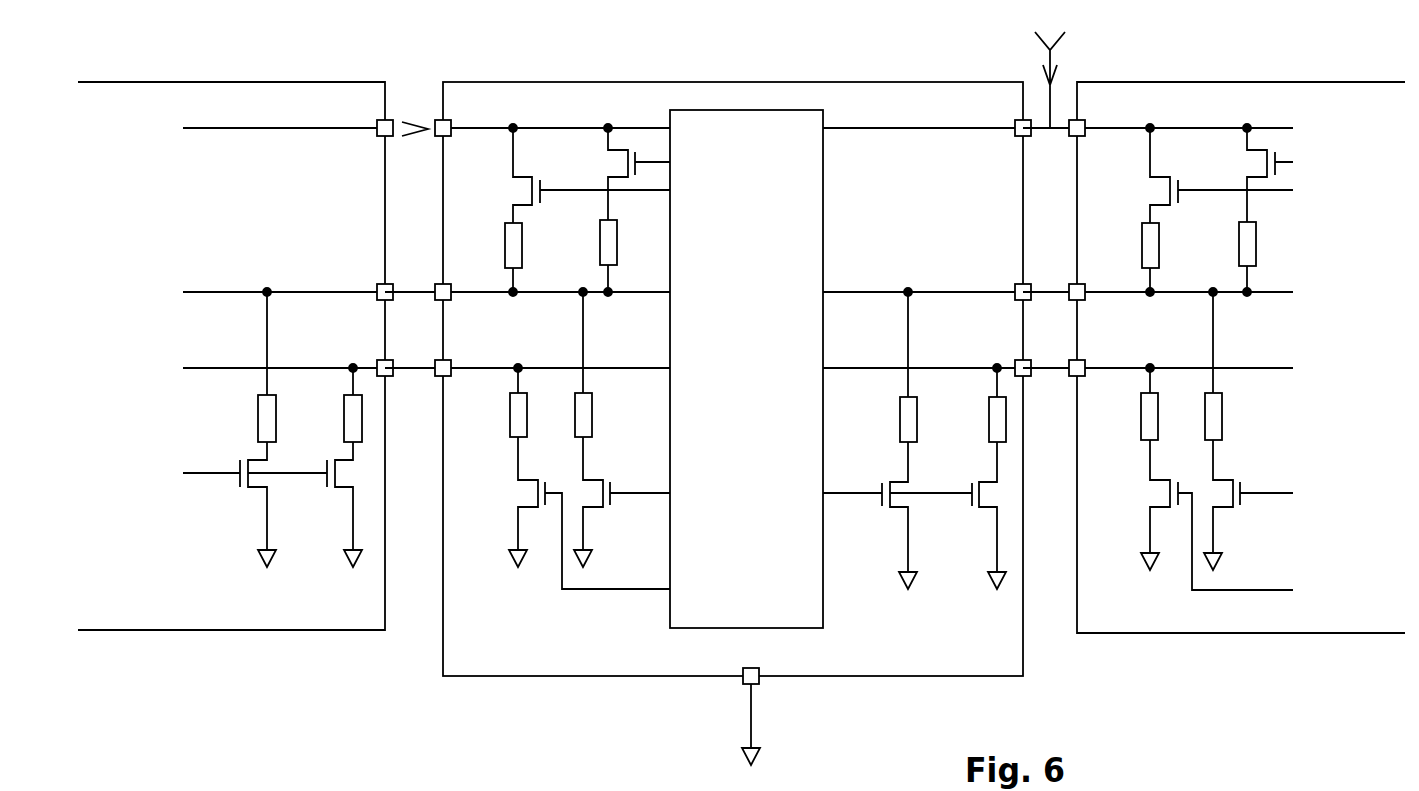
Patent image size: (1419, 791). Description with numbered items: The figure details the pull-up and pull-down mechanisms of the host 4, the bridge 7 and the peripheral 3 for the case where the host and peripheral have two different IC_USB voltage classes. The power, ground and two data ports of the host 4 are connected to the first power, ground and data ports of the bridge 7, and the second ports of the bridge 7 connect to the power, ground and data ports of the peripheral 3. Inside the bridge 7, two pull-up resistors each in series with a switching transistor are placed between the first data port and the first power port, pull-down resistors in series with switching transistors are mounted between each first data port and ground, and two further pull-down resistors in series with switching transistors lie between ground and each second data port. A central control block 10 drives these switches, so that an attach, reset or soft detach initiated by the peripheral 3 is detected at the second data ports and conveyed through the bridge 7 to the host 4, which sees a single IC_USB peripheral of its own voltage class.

The peripheral 3 is at (1214, 357).
The host 4 is at (232, 356).
The bridge 7 is at (732, 385).
The integrated circuit / control unit 10 is at (746, 369).